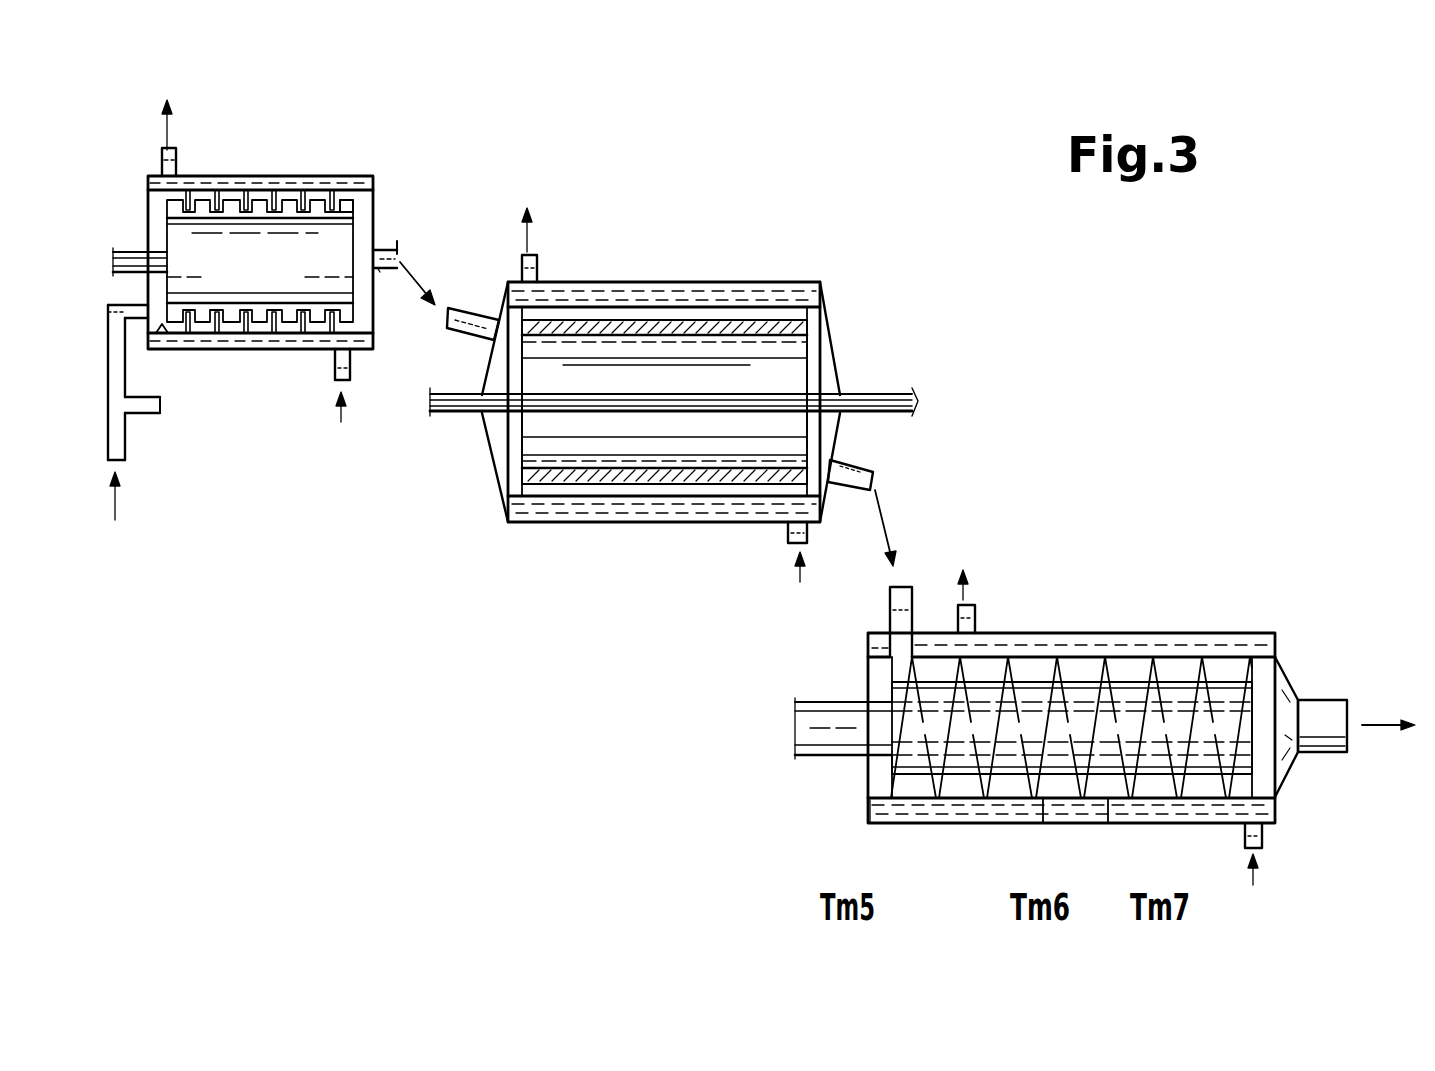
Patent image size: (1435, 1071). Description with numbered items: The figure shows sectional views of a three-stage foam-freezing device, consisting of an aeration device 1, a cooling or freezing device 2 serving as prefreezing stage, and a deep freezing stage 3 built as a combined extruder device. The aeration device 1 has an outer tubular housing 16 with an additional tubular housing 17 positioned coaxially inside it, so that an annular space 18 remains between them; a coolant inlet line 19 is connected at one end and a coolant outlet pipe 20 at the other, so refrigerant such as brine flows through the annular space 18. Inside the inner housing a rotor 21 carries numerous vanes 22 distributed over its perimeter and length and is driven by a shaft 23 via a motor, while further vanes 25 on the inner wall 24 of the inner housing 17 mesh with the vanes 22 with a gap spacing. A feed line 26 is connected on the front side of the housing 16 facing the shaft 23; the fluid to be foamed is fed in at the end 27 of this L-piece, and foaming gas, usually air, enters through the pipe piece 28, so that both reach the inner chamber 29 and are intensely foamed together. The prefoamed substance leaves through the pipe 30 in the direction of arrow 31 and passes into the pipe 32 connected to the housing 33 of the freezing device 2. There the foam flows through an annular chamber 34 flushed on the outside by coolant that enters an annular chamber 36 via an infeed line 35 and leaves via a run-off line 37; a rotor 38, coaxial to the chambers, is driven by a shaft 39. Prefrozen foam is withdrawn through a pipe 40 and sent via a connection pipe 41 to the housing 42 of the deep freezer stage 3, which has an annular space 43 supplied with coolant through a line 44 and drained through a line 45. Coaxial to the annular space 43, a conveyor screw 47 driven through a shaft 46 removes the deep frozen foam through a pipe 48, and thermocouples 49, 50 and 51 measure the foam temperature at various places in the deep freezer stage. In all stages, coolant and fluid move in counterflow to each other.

The aeration device 1 is at (240, 177).
The cooling or freezing device 2 is at (645, 283).
The deep freezing stage 3 is at (1080, 665).
The tubular housing 16 is at (206, 177).
The additional tubular housing 17 is at (351, 179).
The annular space 18 is at (277, 186).
The coolant inlet line 19 is at (336, 368).
The coolant outlet pipe 20 is at (162, 160).
The rotor 21 is at (325, 237).
The vanes 22 is at (350, 201).
The shaft 23 is at (127, 260).
The inner wall 24 is at (163, 333).
The vanes 25 is at (303, 196).
The feed line 26 is at (132, 307).
The end 27 is at (112, 432).
The pipe piece 28 is at (160, 410).
The inner chamber 29 is at (155, 210).
The pipe 30 is at (398, 253).
The arrow 31 is at (473, 302).
The pipe 32 is at (470, 326).
The housing 33 is at (596, 283).
The annular chamber 34 is at (690, 321).
The infeed line 35 is at (793, 535).
The annular chamber 36 is at (600, 505).
The run-off line 37 is at (538, 260).
The rotor 38 is at (756, 364).
The shaft 39 is at (595, 402).
The pipe 40 is at (878, 490).
The connection pipe 41 is at (890, 600).
The housing 42 is at (946, 825).
The annular space 43 is at (1108, 823).
The line 44 is at (1249, 842).
The line 45 is at (978, 612).
The shaft 46 is at (835, 746).
The conveyor screw 47 is at (1158, 668).
The pipe 48 is at (1332, 752).
The thermocouple 49 is at (880, 810).
The thermocouple 50 is at (1043, 825).
The thermocouple 51 is at (1165, 818).